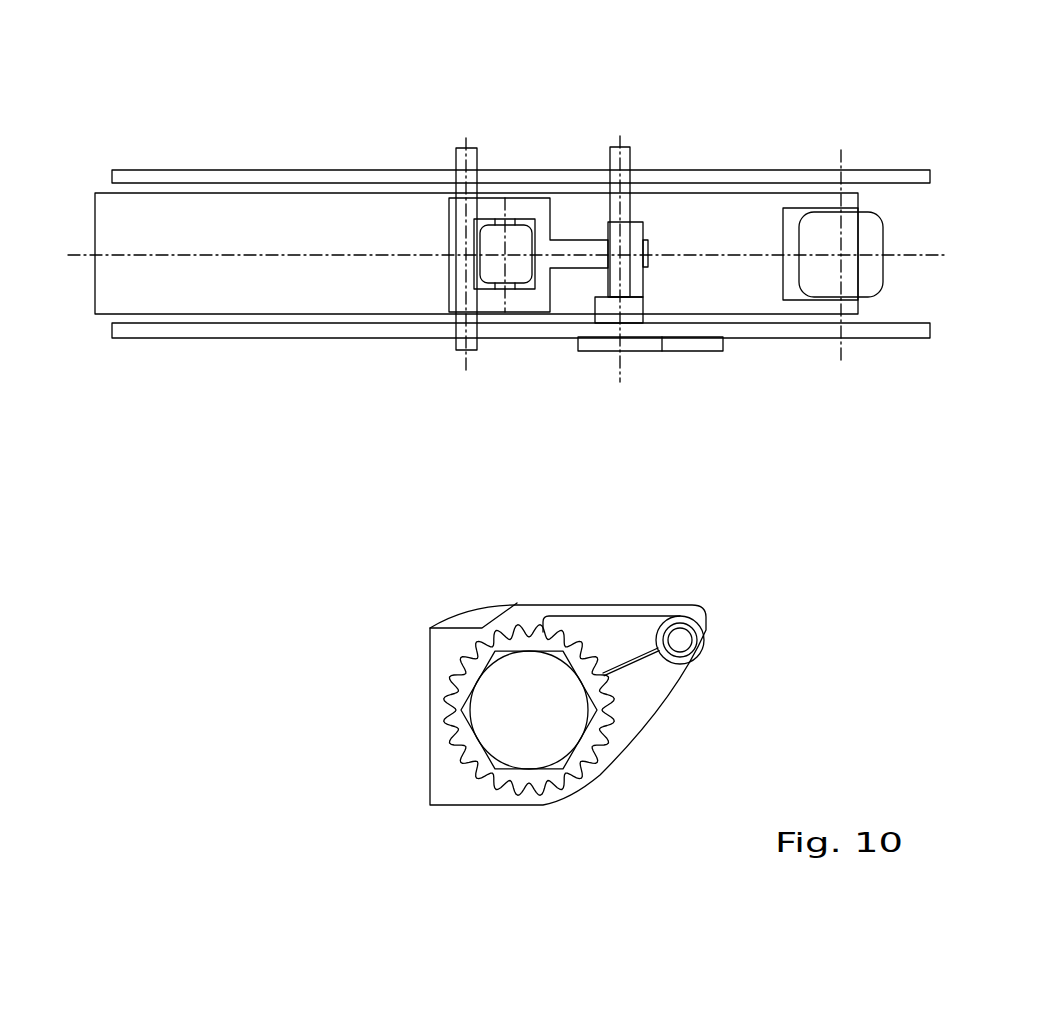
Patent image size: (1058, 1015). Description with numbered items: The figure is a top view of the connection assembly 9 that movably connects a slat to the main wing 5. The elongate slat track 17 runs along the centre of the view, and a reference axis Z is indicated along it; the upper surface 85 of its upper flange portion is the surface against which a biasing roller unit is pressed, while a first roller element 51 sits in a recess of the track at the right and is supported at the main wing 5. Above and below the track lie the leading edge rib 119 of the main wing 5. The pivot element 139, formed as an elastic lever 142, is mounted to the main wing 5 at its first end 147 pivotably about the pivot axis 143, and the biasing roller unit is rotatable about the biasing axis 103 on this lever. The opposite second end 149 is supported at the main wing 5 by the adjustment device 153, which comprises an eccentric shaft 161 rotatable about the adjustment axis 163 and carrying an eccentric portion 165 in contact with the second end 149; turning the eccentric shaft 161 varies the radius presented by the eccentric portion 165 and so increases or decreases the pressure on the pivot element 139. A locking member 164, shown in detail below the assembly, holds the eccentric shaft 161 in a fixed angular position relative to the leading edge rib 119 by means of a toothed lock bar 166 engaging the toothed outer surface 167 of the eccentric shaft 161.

The connection assembly 9 is at (531, 230).
The slat track 17 is at (231, 297).
The upper surface 85 is at (307, 205).
The leading edge rib 119 is at (206, 172).
The pivot axis 143 is at (466, 140).
The biasing axis 103 is at (480, 213).
The first end 147 is at (450, 298).
The pivot element 139 is at (606, 190).
The elastic lever 142 is at (625, 259).
The adjustment device 153 is at (638, 160).
The eccentric portion 165 is at (638, 230).
The second end 149 is at (647, 247).
The eccentric shaft 161 is at (643, 305).
The first roller element 51 is at (880, 280).
The main wing 5 is at (753, 374).
The adjustment axis 163 is at (620, 360).
The locking member 164 is at (597, 633).
The toothed lock bar 166 is at (635, 645).
The toothed outer surface 167 is at (603, 668).
The axis Z is at (59, 271).